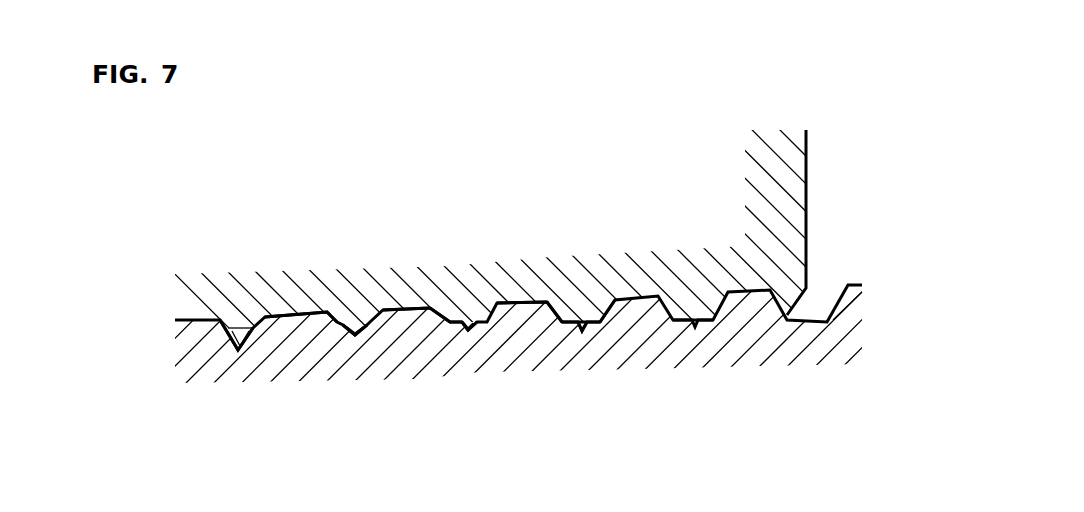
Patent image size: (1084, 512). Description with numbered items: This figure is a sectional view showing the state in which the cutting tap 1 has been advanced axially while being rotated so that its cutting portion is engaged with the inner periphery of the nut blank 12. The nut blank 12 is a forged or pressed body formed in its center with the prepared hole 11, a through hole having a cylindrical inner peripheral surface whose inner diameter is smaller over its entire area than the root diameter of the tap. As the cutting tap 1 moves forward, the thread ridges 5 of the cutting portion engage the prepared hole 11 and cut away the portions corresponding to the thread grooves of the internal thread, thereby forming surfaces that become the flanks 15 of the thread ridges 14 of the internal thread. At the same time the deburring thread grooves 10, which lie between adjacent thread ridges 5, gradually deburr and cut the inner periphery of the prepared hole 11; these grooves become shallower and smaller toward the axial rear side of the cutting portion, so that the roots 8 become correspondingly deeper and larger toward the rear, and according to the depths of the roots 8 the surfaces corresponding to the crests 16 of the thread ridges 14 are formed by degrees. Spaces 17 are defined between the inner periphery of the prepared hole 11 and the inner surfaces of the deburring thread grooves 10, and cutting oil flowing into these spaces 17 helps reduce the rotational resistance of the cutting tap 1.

The cutting tap 1 is at (850, 318).
The thread ridges 5 is at (405, 305).
The roots 8 is at (333, 313).
The deburring thread grooves 10 is at (238, 352).
The prepared hole 11 is at (232, 327).
The nut blank 12 is at (807, 190).
The thread ridges of the internal thread 14 is at (586, 308).
The flanks 15 is at (552, 318).
The crests 16 is at (584, 330).
The spaces 17 is at (246, 338).